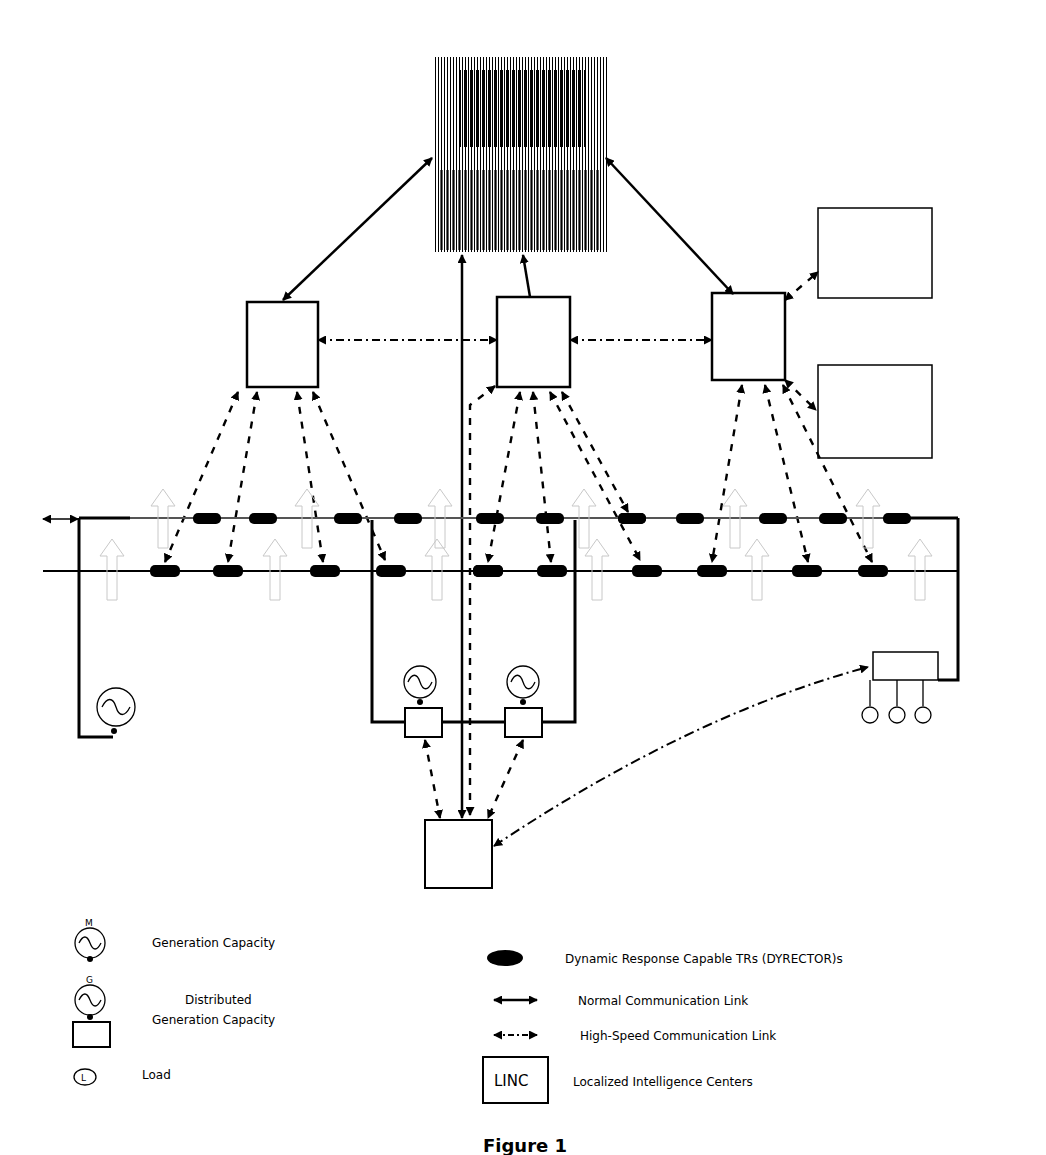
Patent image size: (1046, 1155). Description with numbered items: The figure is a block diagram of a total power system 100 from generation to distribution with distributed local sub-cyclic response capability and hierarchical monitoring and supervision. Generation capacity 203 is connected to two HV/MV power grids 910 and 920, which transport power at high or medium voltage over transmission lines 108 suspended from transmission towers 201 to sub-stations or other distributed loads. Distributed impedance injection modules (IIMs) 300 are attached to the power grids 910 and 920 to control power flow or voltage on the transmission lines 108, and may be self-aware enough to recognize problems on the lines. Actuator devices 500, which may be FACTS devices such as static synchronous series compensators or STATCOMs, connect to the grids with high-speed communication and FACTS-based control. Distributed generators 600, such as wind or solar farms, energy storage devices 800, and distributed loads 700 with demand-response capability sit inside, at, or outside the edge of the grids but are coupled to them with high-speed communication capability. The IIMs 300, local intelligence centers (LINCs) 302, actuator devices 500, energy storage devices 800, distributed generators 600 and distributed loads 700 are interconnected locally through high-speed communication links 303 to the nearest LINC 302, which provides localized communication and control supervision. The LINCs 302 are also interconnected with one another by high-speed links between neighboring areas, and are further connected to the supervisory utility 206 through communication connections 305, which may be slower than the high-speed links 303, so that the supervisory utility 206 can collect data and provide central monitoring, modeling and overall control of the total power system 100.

The system 100 is at (298, 58).
The supervisory utility 206 is at (600, 58).
The communication connections 305 is at (352, 218).
The local intelligence center (LINC) 302 is at (248, 335).
The high-speed communication link 303 is at (390, 346).
The actuator devices 500 is at (888, 216).
The energy storage devices 800 is at (885, 376).
The HV/MV power grid 920 is at (47, 512).
The HV/MV power grid 910 is at (45, 573).
The transmission towers 201 is at (280, 583).
The impedance injection module (IIM) 300 is at (395, 512).
The transmission lines 108 is at (520, 578).
The generation capacity 203 is at (138, 718).
The distributed generators 600 is at (405, 722).
The distributed loads 700 is at (862, 690).